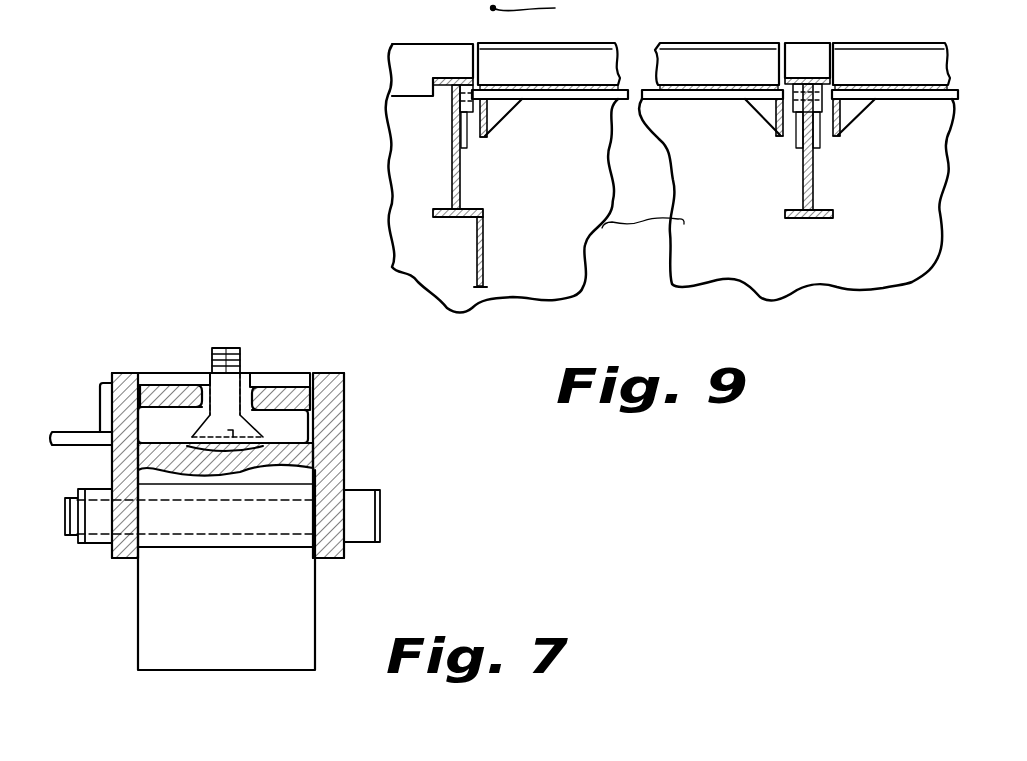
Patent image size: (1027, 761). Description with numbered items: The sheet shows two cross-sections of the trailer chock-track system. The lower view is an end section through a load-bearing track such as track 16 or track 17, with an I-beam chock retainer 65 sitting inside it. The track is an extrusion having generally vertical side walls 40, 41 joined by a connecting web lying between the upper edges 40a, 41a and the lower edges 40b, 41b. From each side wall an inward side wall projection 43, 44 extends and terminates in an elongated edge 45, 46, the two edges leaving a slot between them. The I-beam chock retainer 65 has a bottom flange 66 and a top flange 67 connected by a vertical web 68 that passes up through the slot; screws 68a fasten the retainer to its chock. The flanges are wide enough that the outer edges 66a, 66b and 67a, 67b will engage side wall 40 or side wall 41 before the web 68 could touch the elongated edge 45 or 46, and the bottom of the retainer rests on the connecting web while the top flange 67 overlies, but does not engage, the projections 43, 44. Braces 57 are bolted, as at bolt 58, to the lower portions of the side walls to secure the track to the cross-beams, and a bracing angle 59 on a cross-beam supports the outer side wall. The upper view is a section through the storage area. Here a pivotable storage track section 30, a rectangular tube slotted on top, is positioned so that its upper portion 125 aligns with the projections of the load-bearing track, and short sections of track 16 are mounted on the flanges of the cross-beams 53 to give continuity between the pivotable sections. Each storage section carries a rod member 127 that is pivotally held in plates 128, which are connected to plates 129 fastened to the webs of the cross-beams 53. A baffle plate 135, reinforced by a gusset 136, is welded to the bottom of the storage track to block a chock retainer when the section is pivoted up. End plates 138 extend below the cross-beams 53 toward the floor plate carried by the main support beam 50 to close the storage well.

In FIG. 9, the right-hand track 16 is at (415, 60).
In FIG. 9, the storage track section 30 is at (850, 38).
In FIG. 9, the upper portion of storage track 125 is at (680, 43).
In FIG. 9, the rod member 127 is at (623, 100).
In FIG. 9, the gusset 136 is at (503, 117).
In FIG. 9, the baffle plate 135 is at (481, 140).
In FIG. 9, the plate 128 is at (463, 130).
In FIG. 9, the plate 129 is at (465, 130).
In FIG. 9, the cross-beam 53 is at (460, 190).
In FIG. 9, the main support beam 50 is at (643, 232).
In FIG. 9, the end plate 138 is at (486, 265).
In FIG. 7, the left-hand track 17 is at (377, 422).
In FIG. 7, the side wall 40 is at (112, 467).
In FIG. 7, the upper edge of side wall 40 40a is at (126, 372).
In FIG. 7, the lower edge of side wall 40 40b is at (113, 559).
In FIG. 7, the side wall 41 is at (344, 457).
In FIG. 7, the upper edge of side wall 41 41a is at (338, 372).
In FIG. 7, the lower edge of side wall 41 41b is at (332, 560).
In FIG. 7, the side wall projection 43 is at (172, 390).
In FIG. 7, the side wall projection 44 is at (282, 393).
In FIG. 7, the elongated edge 45 is at (207, 383).
In FIG. 7, the elongated edge 46 is at (243, 383).
In FIG. 7, the brace 57 is at (226, 570).
In FIG. 7, the bolt 58 is at (228, 537).
In FIG. 7, the bracing angle 59 is at (77, 431).
In FIG. 7, the I-beam chock retainer 65 is at (163, 467).
In FIG. 7, the bottom flange 66 is at (273, 433).
In FIG. 7, the outer edge of bottom flange 66a is at (139, 430).
In FIG. 7, the outer edge of bottom flange 66b is at (310, 423).
In FIG. 7, the top flange 67 is at (260, 372).
In FIG. 7, the outer edge of top flange 67a is at (135, 372).
In FIG. 7, the outer edge of top flange 67b is at (304, 368).
In FIG. 7, the web 68 is at (228, 347).
In FIG. 7, the screw 68a is at (214, 347).